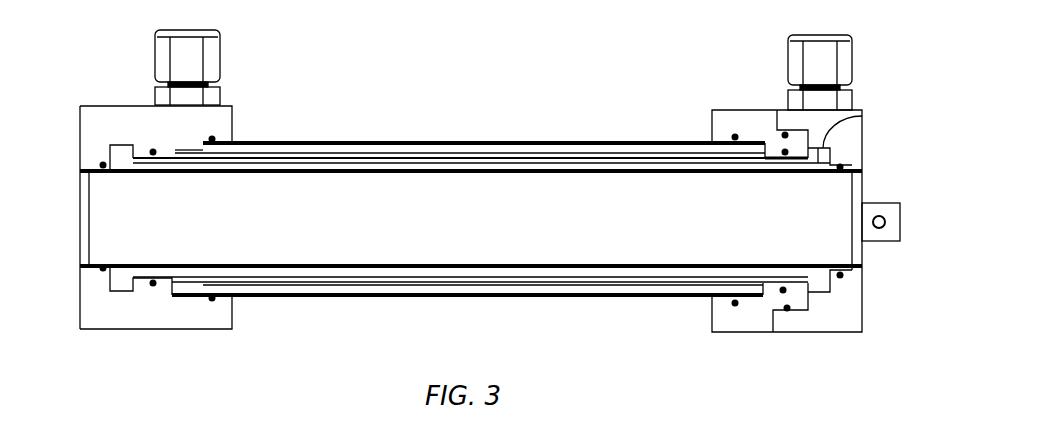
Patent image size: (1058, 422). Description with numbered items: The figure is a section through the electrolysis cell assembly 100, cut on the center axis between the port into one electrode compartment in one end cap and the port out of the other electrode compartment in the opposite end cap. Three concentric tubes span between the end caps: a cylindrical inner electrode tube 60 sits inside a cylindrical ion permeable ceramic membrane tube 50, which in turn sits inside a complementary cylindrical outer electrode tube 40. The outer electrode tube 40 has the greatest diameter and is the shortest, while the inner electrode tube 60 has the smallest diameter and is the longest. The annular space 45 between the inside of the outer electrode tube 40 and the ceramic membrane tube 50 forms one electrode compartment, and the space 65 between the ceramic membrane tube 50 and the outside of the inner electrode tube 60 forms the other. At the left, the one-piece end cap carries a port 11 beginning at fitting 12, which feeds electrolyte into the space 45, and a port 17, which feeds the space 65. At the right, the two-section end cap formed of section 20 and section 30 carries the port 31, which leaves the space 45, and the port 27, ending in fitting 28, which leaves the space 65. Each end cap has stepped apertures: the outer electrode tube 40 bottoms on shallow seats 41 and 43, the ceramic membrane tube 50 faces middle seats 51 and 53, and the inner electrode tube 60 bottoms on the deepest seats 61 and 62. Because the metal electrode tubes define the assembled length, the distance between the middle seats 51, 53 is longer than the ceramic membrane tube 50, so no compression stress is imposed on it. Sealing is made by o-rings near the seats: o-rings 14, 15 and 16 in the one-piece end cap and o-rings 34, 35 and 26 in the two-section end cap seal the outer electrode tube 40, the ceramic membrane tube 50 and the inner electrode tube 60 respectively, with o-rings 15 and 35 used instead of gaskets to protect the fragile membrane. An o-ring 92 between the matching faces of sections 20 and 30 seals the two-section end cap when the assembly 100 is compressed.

The electrolysis cell assembly 100 is at (562, 103).
The inner electrode tube 60 is at (500, 170).
The outer electrode tube 40 is at (313, 143).
The space 45 is at (357, 153).
The ceramic membrane tube 50 is at (406, 158).
The space 65 is at (453, 163).
The fitting 12 is at (163, 72).
The fitting 28 is at (842, 77).
The port 17 is at (104, 162).
The o-ring 16 is at (95, 160).
The o-ring 15 is at (150, 150).
The port 11 is at (175, 150).
The o-ring 14 is at (214, 139).
The port 27 is at (862, 118).
The o-ring 34 is at (735, 137).
The o-ring 35 is at (785, 152).
The o-ring 92 is at (785, 135).
The o-ring 26 is at (842, 167).
The end cap section 20 is at (862, 307).
The end cap section 30 is at (727, 325).
The seat 43 is at (743, 295).
The port 31 is at (760, 287).
The seat 53 is at (808, 310).
The seat 62 is at (850, 270).
The seat 61 is at (89, 266).
The seat 51 is at (140, 278).
The seat 41 is at (203, 295).